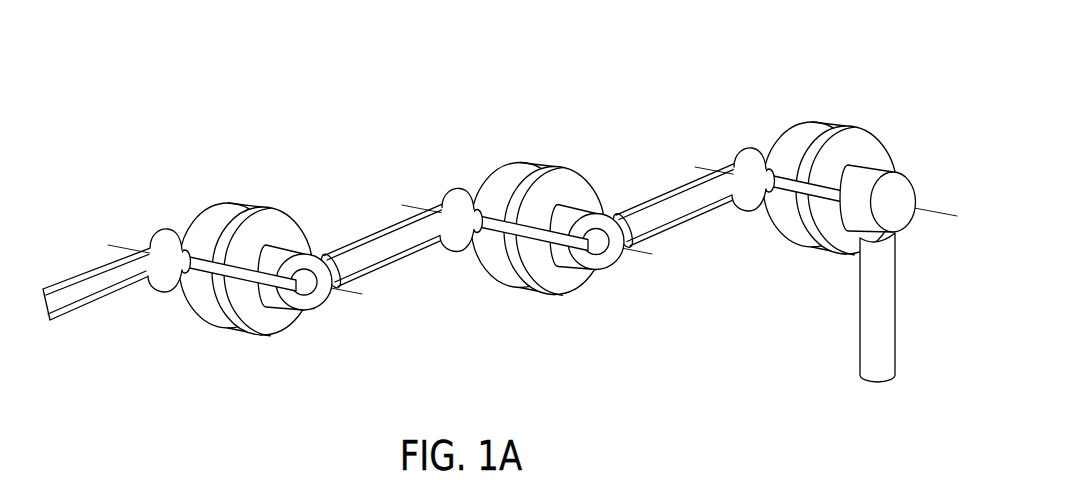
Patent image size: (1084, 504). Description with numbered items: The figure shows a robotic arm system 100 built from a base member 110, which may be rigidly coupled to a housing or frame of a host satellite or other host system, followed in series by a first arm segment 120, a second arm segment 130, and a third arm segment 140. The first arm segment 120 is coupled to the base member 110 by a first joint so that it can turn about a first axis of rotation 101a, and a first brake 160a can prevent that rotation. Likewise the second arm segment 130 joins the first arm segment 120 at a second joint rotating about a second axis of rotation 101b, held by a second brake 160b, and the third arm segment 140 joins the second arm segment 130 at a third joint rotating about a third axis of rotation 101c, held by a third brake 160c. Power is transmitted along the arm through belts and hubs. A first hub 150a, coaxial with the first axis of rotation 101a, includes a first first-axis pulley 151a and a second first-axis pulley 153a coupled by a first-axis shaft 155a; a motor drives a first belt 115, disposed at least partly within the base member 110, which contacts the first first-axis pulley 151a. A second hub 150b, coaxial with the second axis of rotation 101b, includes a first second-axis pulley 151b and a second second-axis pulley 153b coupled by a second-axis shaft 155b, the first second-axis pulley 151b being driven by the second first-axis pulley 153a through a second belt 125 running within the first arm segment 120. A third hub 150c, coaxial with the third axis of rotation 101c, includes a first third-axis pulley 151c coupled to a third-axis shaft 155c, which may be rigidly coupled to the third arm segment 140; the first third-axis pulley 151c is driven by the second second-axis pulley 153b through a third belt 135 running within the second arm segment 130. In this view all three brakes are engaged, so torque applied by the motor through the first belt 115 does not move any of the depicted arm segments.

The robotic arm system 100 is at (501, 223).
The first axis of rotation 101a is at (345, 297).
The second axis of rotation 101b is at (636, 255).
The third axis of rotation 101c is at (925, 215).
The base member 110 is at (111, 288).
The first belt 115 is at (122, 282).
The first arm segment 120 is at (393, 247).
The second belt 125 is at (393, 231).
The second arm segment 130 is at (695, 203).
The third belt 135 is at (692, 200).
The third arm segment 140 is at (858, 310).
The first hub 150a is at (217, 263).
The second hub 150b is at (509, 223).
The third hub 150c is at (801, 159).
The first first-axis pulley 151a is at (144, 218).
The first second-axis pulley 151b is at (437, 178).
The first third-axis pulley 151c is at (757, 168).
The second first-axis pulley 153a is at (290, 270).
The second second-axis pulley 153b is at (580, 231).
The first-axis shaft 155a is at (205, 255).
The second-axis shaft 155b is at (497, 214).
The third-axis shaft 155c is at (788, 174).
The first brake 160a is at (228, 327).
The second brake 160b is at (520, 287).
The third brake 160c is at (818, 241).